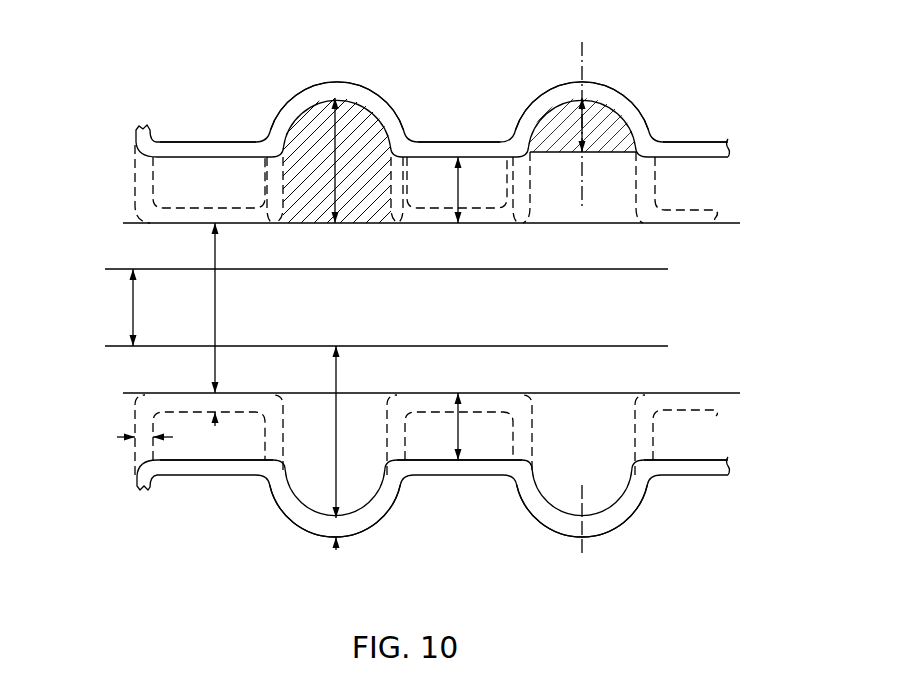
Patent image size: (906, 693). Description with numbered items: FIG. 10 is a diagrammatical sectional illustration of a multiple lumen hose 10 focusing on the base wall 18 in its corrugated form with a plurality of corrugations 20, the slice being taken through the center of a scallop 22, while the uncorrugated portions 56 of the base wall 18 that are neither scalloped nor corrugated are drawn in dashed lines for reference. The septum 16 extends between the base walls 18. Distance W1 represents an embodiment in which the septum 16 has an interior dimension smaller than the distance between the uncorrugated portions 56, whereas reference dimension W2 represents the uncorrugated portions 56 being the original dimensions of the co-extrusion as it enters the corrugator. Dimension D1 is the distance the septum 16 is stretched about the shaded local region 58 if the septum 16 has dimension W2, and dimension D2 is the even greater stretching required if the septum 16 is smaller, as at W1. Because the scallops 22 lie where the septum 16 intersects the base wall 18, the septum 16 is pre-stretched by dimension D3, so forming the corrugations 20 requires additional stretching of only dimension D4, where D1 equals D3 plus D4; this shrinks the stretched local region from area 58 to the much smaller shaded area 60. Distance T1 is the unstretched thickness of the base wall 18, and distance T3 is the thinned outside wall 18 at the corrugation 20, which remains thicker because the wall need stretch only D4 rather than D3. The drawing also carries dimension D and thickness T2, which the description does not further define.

The multiple lumen hose 10 is at (687, 36).
The septum 16 is at (375, 319).
The base wall 18 is at (640, 127).
The corrugation 20 is at (332, 81).
The scallop 22 is at (208, 141).
The uncorrugated portion 56 is at (288, 225).
The local region 58 is at (293, 181).
The local region 60 is at (595, 143).
The dimension D1 is at (335, 187).
The dimension D2 is at (338, 432).
The dimension D3 is at (459, 187).
The dimension D4 is at (582, 130).
The depth dimension D is at (459, 427).
The distance W1 is at (133, 307).
The reference dimension W2 is at (214, 250).
The distance T1 is at (218, 408).
The thickness T2 is at (142, 436).
The distance T3 is at (328, 528).